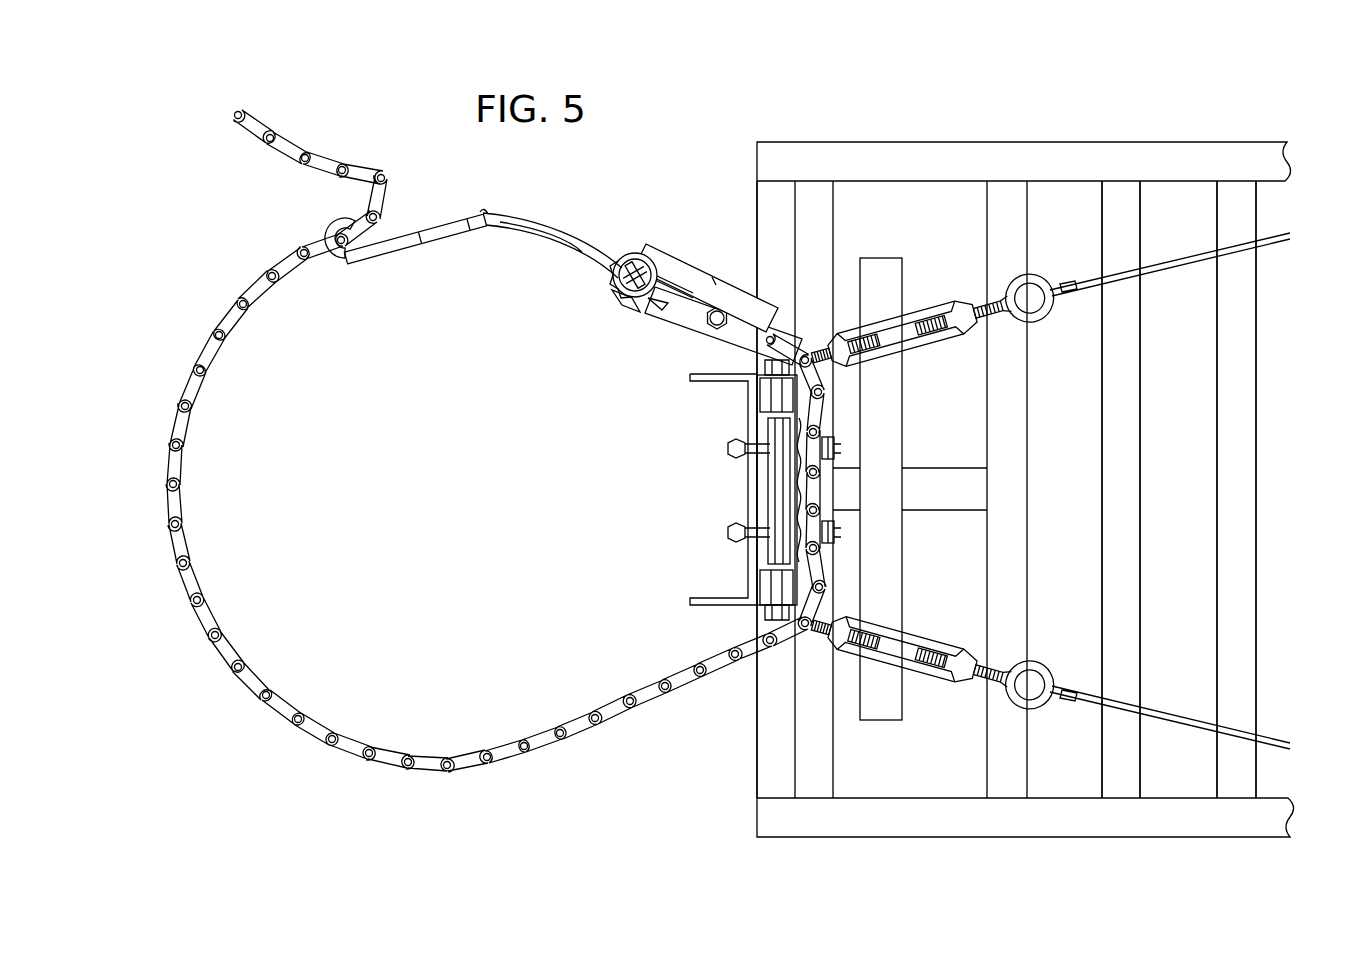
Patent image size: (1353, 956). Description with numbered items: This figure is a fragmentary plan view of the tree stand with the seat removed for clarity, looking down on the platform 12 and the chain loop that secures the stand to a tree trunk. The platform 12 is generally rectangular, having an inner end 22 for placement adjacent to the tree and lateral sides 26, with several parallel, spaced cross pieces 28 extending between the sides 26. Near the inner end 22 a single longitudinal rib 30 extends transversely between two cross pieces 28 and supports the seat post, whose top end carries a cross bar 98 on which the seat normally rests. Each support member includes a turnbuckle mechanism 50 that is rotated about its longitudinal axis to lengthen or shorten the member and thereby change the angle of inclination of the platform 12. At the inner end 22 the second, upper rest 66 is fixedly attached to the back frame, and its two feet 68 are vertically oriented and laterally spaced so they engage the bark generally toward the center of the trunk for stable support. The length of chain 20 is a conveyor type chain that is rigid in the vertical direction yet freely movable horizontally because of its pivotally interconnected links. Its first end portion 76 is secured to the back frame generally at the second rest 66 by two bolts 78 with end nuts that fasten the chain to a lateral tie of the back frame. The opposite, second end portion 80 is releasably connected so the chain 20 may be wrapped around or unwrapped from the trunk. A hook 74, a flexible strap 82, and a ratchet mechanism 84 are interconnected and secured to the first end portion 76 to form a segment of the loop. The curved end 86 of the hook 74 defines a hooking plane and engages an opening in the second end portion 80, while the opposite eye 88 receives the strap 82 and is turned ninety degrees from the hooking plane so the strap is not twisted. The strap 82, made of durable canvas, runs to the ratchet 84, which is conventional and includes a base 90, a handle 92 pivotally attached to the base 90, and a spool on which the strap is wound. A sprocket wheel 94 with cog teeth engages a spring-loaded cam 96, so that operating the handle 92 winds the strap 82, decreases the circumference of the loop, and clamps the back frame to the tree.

The platform 12 is at (913, 141).
The length of chain 20 is at (188, 498).
The inner end 22 is at (757, 742).
The lateral sides 26 is at (1010, 142).
The cross pieces 28 is at (1145, 431).
The longitudinal rib 30 is at (930, 512).
The turnbuckle mechanism 50 is at (930, 300).
The second rest 66 is at (745, 492).
The feet 68 is at (690, 378).
The hook 74 is at (378, 265).
The first end portion 76 is at (817, 489).
The bolts 78 is at (765, 447).
The second end portion 80 is at (329, 158).
The flexible strap 82 is at (584, 250).
The ratchet mechanism 84 is at (640, 260).
The curved end 86 is at (336, 214).
The eye 88 is at (458, 238).
The base 90 is at (690, 322).
The handle 92 is at (690, 270).
The sprocket wheel 94 is at (622, 300).
The spring-loaded cam 96 is at (657, 302).
The cross bar 98 is at (902, 380).